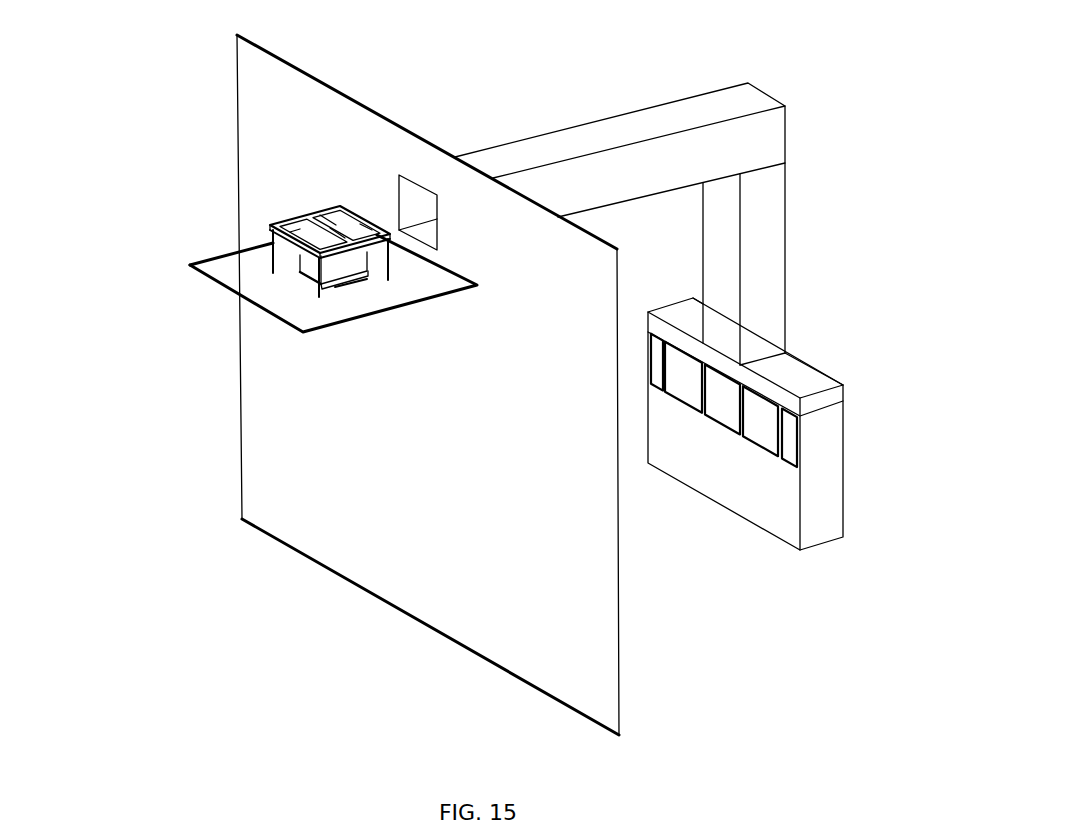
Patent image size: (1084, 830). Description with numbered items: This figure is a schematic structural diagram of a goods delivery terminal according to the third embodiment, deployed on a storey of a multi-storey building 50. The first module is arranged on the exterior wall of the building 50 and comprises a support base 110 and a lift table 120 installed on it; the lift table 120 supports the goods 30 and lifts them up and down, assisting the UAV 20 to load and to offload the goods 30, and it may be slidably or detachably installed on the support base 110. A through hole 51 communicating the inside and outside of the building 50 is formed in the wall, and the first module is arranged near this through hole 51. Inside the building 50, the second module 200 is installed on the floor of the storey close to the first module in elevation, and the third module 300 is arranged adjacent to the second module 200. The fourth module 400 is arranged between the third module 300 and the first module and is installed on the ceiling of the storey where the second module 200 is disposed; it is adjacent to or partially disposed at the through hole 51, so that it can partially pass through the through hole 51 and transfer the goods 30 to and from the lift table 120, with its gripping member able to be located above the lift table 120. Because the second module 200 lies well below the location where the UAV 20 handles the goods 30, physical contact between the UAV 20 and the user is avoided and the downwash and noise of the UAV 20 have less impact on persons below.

The UAV 20 is at (310, 217).
The goods 30 is at (310, 255).
The multi-storey building 50 is at (593, 663).
The through hole 51 is at (413, 175).
The support base 110 is at (205, 276).
The lift table 120 is at (307, 277).
The second module 200 is at (845, 503).
The third module 300 is at (787, 258).
The fourth module 400 is at (702, 92).